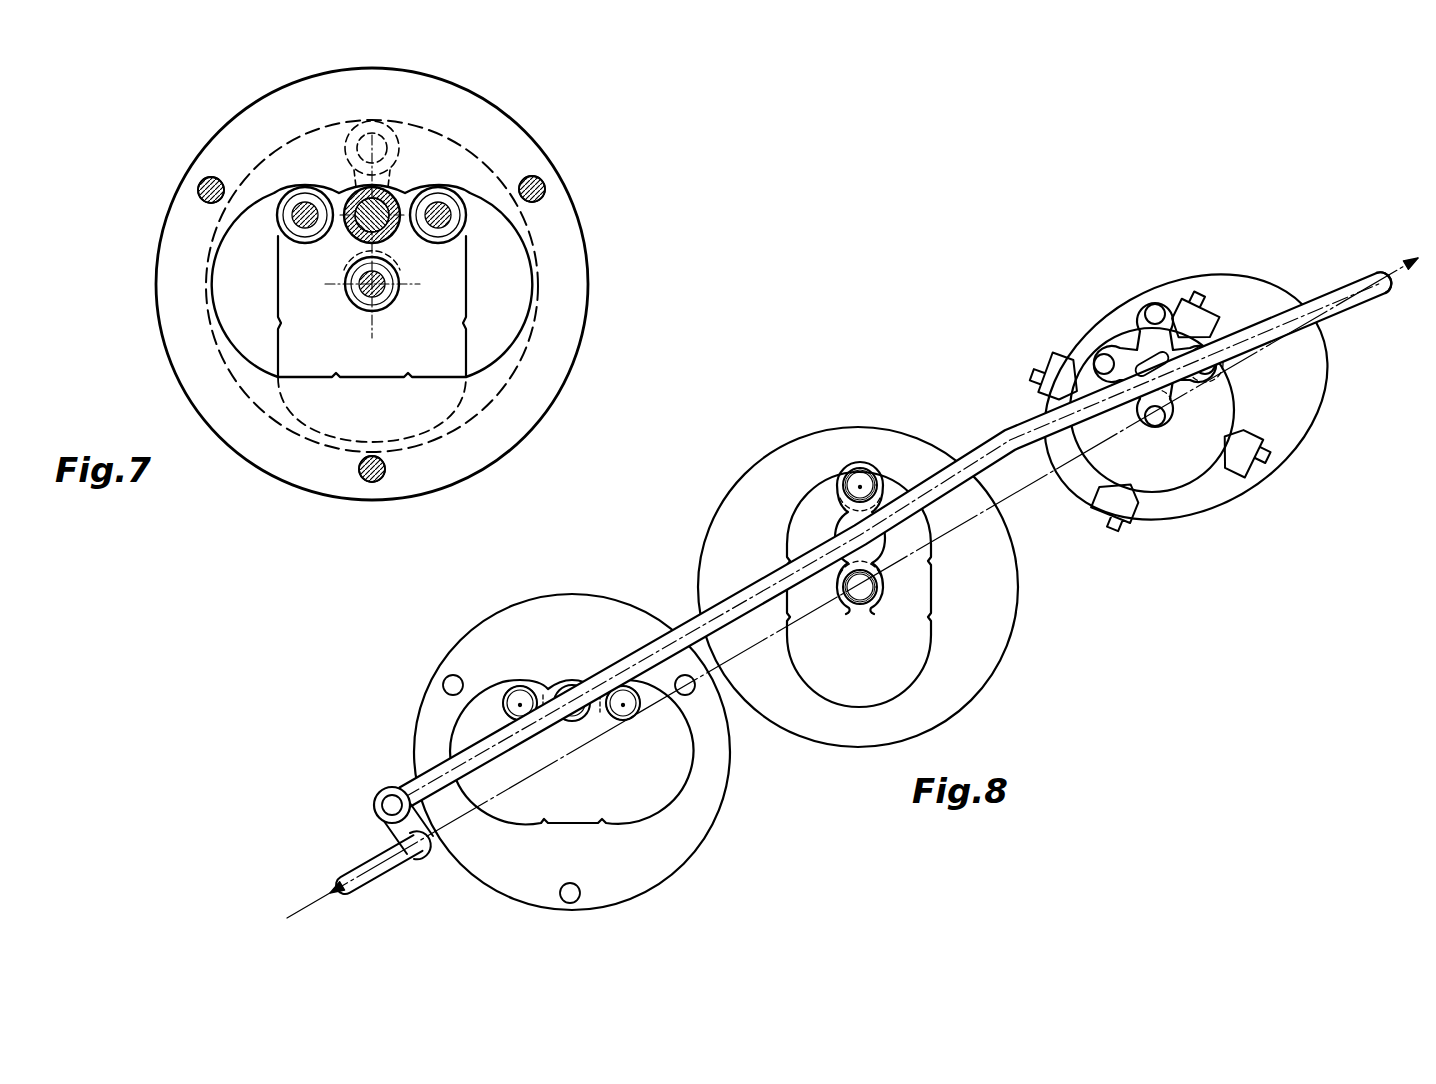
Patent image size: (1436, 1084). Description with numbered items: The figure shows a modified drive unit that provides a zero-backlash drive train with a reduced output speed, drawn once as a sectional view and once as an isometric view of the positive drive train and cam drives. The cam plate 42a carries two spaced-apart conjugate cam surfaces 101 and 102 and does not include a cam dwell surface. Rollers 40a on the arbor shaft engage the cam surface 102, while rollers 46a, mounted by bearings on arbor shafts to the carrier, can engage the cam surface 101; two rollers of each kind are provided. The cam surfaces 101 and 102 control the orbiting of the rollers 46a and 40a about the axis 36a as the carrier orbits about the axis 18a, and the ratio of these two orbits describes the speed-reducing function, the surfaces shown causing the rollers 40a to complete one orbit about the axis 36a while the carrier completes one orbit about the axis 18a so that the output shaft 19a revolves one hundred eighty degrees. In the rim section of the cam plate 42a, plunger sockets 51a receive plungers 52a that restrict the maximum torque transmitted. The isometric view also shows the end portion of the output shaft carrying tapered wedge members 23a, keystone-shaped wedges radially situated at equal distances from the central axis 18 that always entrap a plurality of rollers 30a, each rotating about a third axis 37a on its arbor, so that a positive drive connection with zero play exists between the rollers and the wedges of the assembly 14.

In FIG. 8, the ratchet wheel assembly 14 is at (1126, 310).
In FIG. 8, the axis 18 is at (578, 595).
In FIG. 7, the axis 18a is at (366, 296).
In FIG. 8, the axis 18a is at (380, 860).
In FIG. 8, the output shaft 19a is at (1355, 320).
In FIG. 8, the tapered wedge member 23a is at (1063, 356).
In FIG. 8, the roller 30a is at (1160, 298).
In FIG. 7, the axis 36a is at (385, 232).
In FIG. 8, the axis 36a is at (770, 585).
In FIG. 8, the axis 37a is at (521, 700).
In FIG. 7, the roller 40a is at (396, 124).
In FIG. 8, the roller 40a is at (861, 485).
In FIG. 7, the cam plate 42a is at (558, 398).
In FIG. 7, the roller 46a is at (300, 246).
In FIG. 8, the roller 46a is at (503, 706).
In FIG. 7, the plunger socket 51a is at (205, 180).
In FIG. 7, the plunger 52a is at (198, 194).
In FIG. 7, the cam surface 101 is at (512, 236).
In FIG. 8, the cam surface 101 is at (605, 821).
In FIG. 7, the cam surface 102 is at (444, 163).
In FIG. 8, the cam surface 102 is at (860, 706).